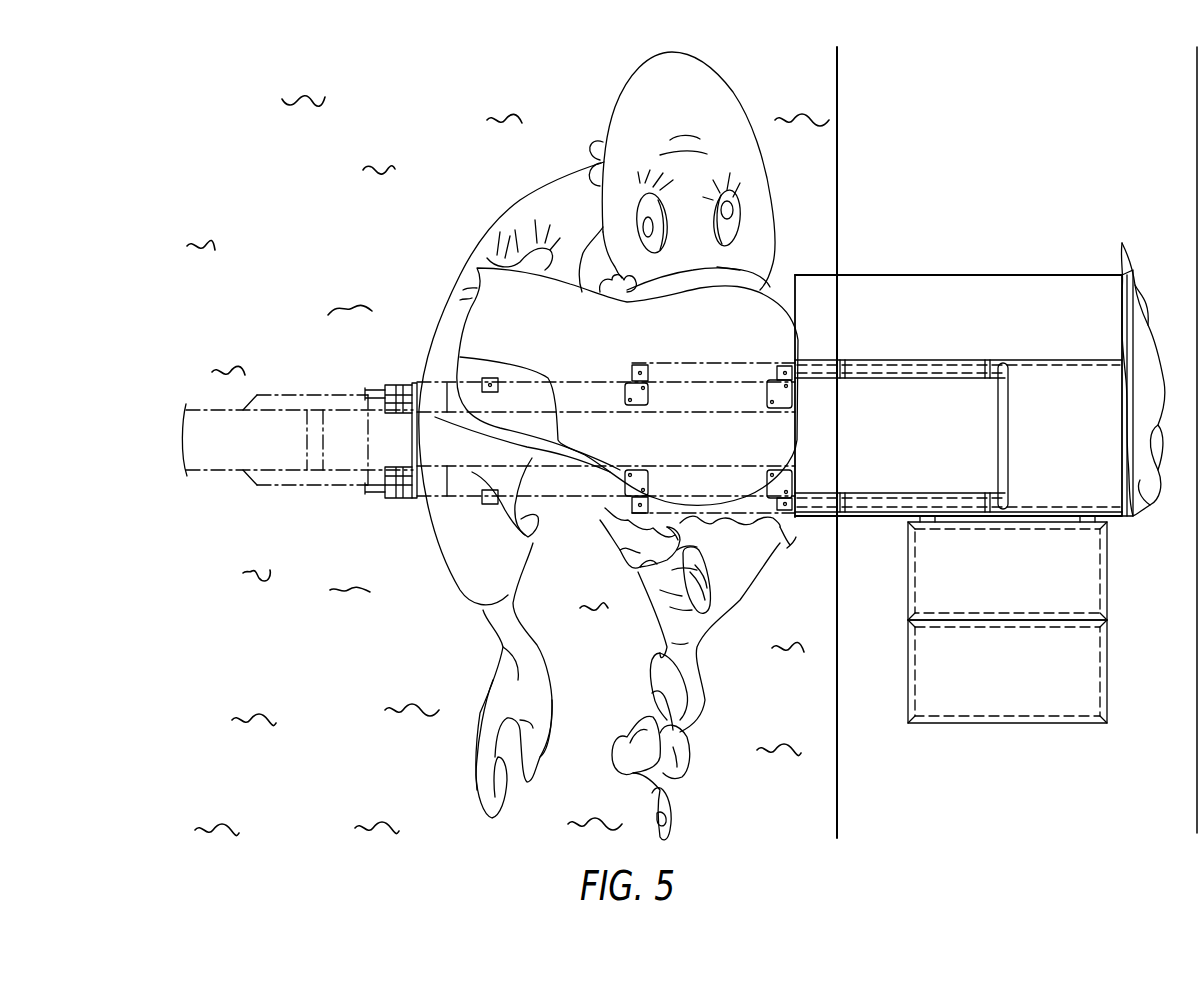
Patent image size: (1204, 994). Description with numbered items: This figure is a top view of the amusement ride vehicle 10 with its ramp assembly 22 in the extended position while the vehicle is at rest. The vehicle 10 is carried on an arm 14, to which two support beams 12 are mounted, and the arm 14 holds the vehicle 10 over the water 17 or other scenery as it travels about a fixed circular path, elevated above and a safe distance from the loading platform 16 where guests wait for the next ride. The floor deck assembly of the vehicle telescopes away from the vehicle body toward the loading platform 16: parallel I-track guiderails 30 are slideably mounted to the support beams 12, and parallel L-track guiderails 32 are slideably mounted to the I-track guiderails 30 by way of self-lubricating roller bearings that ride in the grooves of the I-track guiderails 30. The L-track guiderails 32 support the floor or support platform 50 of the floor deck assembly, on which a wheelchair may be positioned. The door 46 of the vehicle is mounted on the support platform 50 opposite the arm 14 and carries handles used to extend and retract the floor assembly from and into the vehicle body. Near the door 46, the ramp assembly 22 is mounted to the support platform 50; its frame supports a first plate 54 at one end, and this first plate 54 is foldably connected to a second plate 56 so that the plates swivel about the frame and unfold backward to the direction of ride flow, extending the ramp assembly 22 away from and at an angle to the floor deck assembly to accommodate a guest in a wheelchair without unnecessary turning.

The amusement ride vehicle 10 is at (302, 196).
The support beams 12 is at (572, 395).
The arm 14 is at (224, 449).
The loading platform 16 is at (1022, 786).
The water 17 is at (344, 746).
The ramp assembly 22 is at (1047, 622).
The I-track guiderails 30 is at (688, 363).
The L-track guiderails 32 is at (964, 396).
The door 46 is at (1143, 332).
The support platform 50 is at (914, 444).
The first plate 54 is at (1020, 579).
The second plate 56 is at (1020, 679).